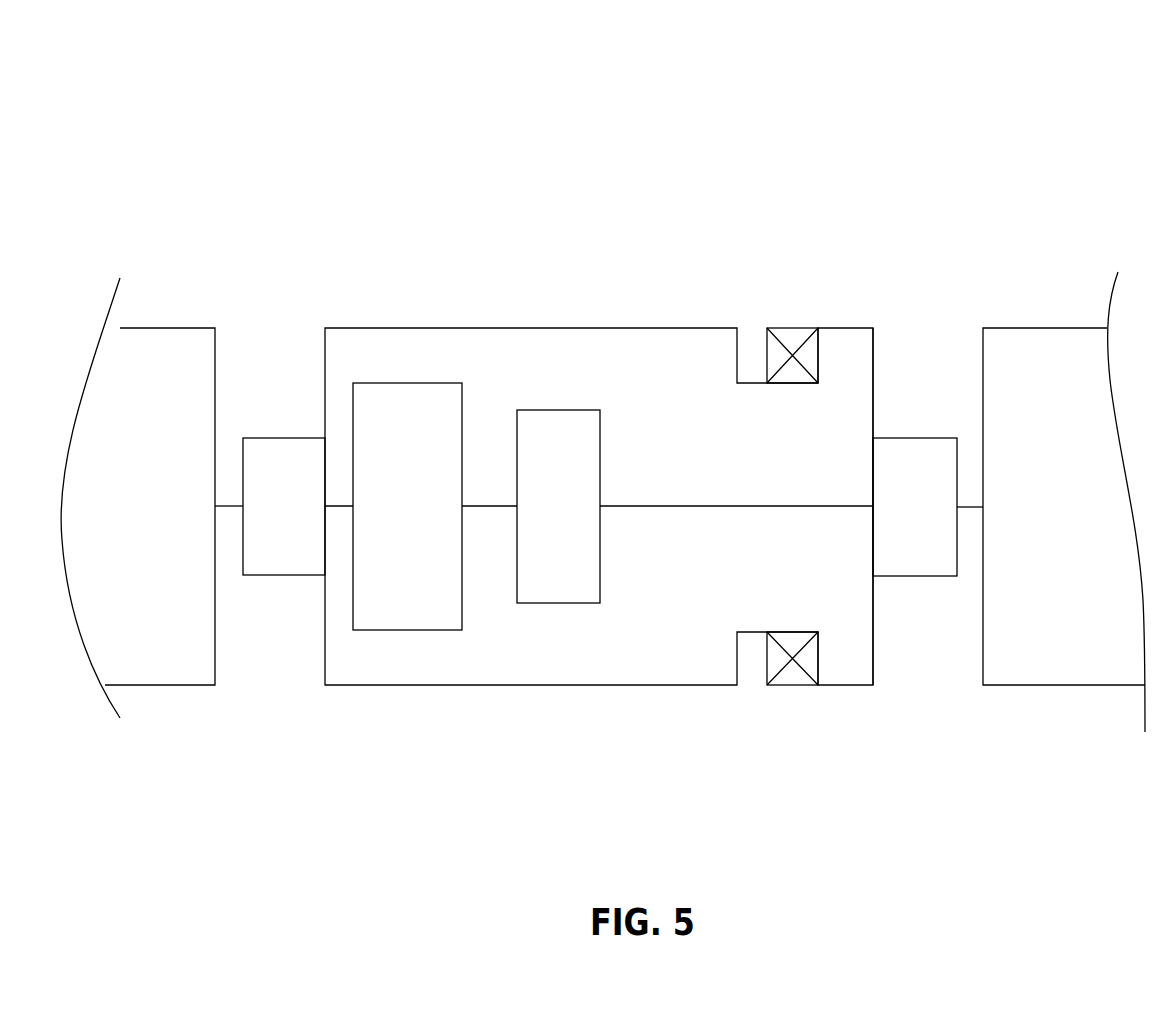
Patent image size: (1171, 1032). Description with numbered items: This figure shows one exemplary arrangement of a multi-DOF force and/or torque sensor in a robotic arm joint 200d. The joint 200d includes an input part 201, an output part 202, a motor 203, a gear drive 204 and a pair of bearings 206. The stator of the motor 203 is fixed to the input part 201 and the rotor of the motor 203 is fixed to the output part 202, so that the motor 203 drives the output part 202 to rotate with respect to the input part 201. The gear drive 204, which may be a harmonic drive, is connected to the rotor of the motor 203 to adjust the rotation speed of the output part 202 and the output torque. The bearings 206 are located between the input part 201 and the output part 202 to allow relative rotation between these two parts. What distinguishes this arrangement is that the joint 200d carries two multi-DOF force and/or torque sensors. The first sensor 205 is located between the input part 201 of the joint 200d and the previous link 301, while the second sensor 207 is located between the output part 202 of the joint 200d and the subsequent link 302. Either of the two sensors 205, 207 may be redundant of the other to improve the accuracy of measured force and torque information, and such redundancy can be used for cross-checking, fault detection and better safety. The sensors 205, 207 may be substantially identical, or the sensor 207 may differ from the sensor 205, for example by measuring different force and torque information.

The joint 200d is at (297, 56).
The input part 201 is at (327, 360).
The output part 202 is at (873, 368).
The motor 203 is at (403, 440).
The gear drive 204 is at (568, 450).
The first multi-DOF force and/or torque sensor 205 is at (285, 527).
The bearing 206 is at (790, 345).
The second multi-DOF force and/or torque sensor 207 is at (918, 540).
The previous link 301 is at (142, 467).
The subsequent link 302 is at (1033, 443).